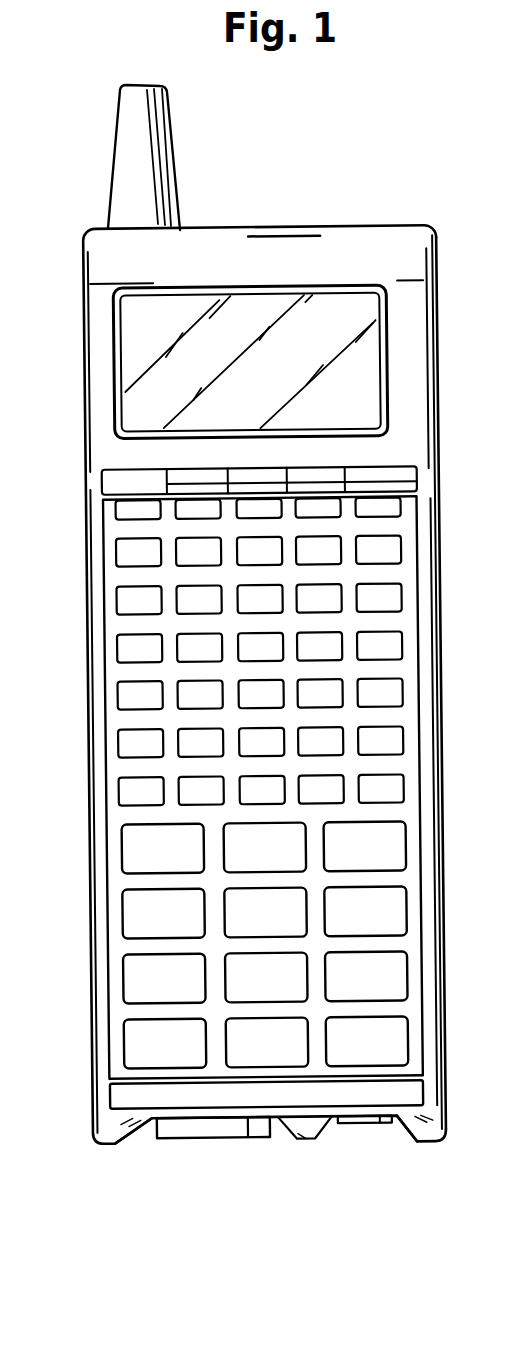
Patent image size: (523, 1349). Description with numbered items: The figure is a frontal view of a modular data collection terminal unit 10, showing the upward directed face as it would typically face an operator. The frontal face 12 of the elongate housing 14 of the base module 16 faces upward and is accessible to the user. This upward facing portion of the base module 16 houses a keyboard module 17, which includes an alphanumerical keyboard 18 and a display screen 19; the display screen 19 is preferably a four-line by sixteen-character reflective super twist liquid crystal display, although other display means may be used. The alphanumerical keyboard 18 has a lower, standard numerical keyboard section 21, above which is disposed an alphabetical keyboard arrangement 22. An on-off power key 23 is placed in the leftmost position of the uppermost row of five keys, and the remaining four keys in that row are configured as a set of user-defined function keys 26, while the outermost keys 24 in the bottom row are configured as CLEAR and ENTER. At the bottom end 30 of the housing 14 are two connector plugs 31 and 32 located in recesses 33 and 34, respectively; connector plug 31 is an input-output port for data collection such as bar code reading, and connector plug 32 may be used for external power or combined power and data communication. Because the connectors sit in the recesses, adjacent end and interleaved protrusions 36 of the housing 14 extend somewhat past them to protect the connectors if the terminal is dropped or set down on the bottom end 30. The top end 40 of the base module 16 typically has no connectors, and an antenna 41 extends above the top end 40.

The data collection terminal unit 10 is at (298, 684).
The frontal face 12 is at (410, 450).
The elongate housing 14 is at (443, 556).
The base module 16 is at (440, 704).
The keyboard module 17 is at (443, 750).
The alphanumerical keyboard 18 is at (417, 778).
The display screen 19 is at (372, 363).
The numerical keyboard section 21 is at (314, 944).
The alphabetical keyboard arrangement 22 is at (407, 620).
The on-off power key 23 is at (120, 505).
The outermost keys 24 is at (408, 1040).
The user-defined function keys 26 is at (197, 483).
The bottom end 30 is at (273, 1165).
The connector plug 31 is at (223, 1165).
The connector plug 32 is at (390, 1163).
The recess 33 is at (245, 1138).
The recess 34 is at (380, 1125).
The protrusions 36 is at (107, 1141).
The top end 40 is at (263, 224).
The antenna 41 is at (165, 148).